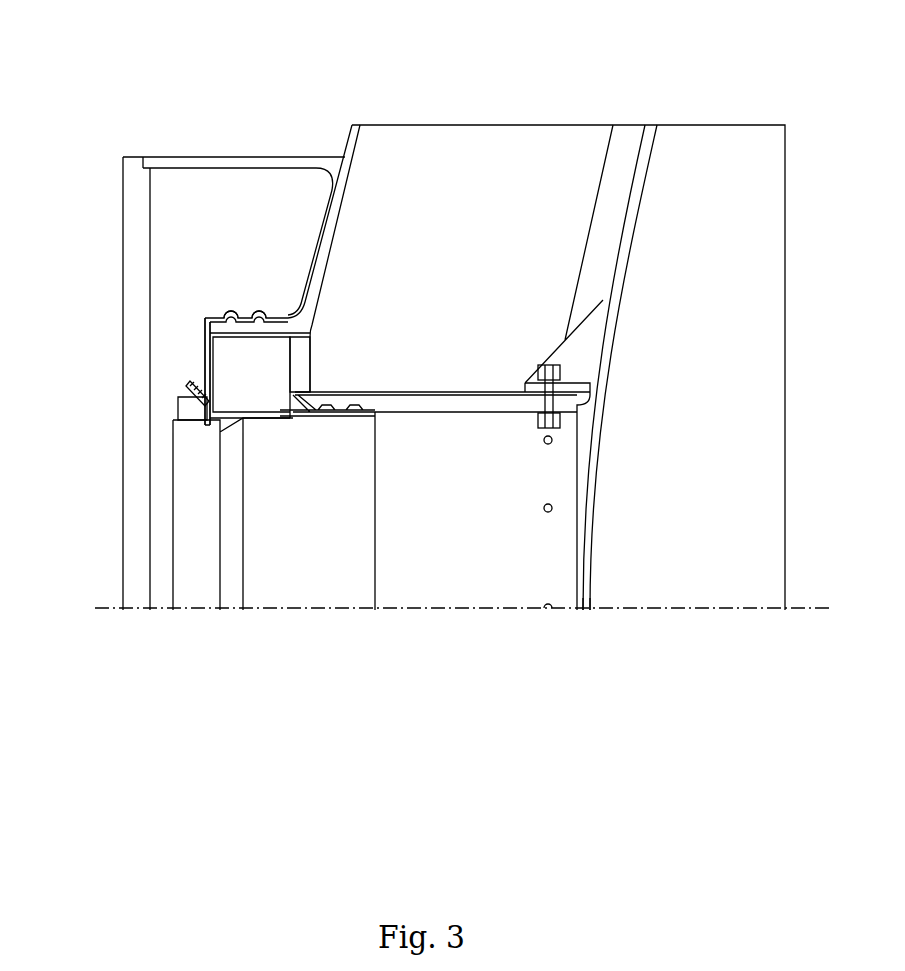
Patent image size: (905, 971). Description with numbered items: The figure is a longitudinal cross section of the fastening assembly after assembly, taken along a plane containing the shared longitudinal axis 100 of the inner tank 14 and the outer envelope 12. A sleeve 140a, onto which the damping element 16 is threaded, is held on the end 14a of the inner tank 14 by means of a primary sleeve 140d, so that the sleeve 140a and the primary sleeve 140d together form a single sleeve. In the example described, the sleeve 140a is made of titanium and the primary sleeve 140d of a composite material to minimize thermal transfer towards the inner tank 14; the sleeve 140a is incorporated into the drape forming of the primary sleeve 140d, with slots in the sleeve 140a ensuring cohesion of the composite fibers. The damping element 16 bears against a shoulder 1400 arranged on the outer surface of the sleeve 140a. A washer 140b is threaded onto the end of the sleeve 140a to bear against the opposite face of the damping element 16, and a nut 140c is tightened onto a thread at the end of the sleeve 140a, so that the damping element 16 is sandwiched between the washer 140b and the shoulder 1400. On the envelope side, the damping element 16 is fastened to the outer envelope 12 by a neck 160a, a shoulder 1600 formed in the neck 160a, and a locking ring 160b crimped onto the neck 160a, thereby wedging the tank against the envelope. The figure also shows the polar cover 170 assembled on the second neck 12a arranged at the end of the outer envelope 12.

The shared longitudinal axis 100 is at (800, 612).
The outer envelope 12 is at (332, 175).
The second neck 12a is at (228, 160).
The inner tank 14 is at (642, 140).
The end of the inner tank 14a is at (597, 606).
The damping element 16 is at (258, 352).
The neck 160a is at (228, 323).
The locking ring 160b is at (205, 318).
The shoulder 1600 is at (290, 333).
The polar cover 170 is at (137, 185).
The shoulder 1400 is at (312, 417).
The sleeve 140a is at (196, 572).
The washer 140b is at (190, 390).
The nut 140c is at (190, 410).
The primary sleeve 140d is at (470, 565).